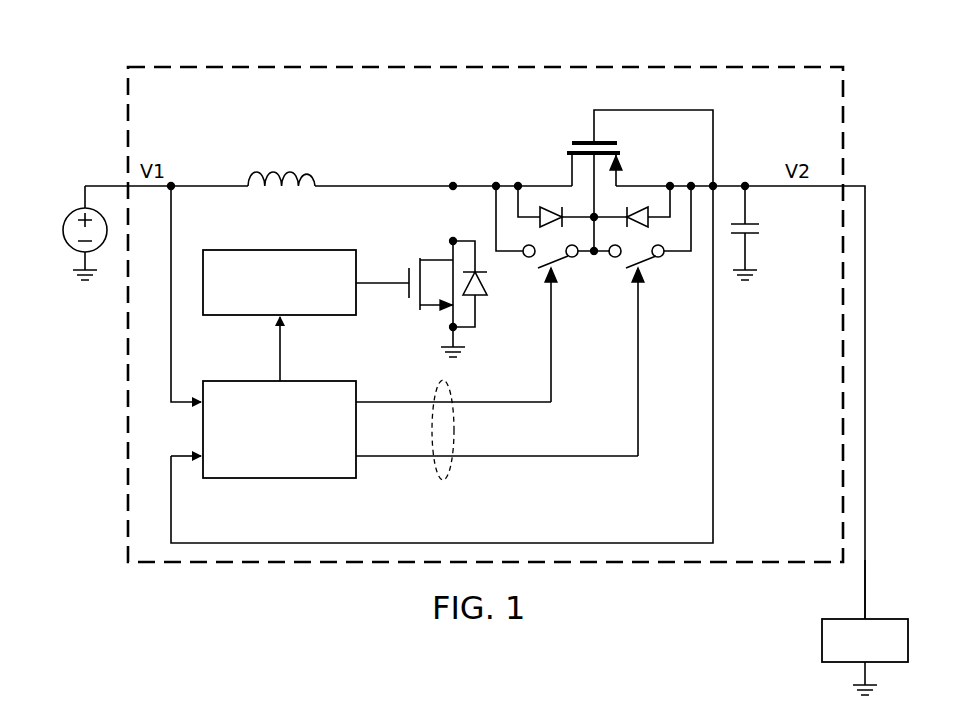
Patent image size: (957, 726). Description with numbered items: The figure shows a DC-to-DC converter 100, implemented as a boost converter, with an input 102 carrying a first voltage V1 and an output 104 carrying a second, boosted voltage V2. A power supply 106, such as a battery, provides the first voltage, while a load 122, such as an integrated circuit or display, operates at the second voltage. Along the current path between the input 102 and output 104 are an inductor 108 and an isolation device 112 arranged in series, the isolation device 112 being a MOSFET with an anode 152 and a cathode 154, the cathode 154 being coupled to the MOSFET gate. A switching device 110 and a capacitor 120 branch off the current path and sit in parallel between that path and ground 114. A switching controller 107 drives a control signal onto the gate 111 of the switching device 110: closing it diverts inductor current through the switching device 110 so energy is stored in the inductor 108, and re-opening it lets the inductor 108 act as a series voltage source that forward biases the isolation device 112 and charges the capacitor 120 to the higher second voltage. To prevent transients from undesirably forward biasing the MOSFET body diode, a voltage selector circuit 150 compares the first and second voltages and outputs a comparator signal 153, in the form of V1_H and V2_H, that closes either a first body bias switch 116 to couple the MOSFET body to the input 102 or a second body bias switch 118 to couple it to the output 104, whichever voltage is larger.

The DC-to-DC converter 100 is at (343, 64).
The input 102 is at (110, 184).
The output 104 is at (864, 588).
The power supply 106 is at (75, 212).
The switching controller 107 is at (273, 249).
The inductor 108 is at (276, 168).
The switching device 110 is at (404, 265).
The gate 111 is at (392, 284).
The isolation device 112 is at (583, 141).
The ground 114 is at (72, 282).
The first body bias switch 116 is at (562, 272).
The second body bias switch 118 is at (652, 272).
The capacitor 120 is at (755, 229).
The load 122 is at (821, 640).
The voltage selector circuit 150 is at (271, 480).
The anode 152 is at (504, 183).
The comparator signal 153 is at (446, 482).
The cathode 154 is at (676, 183).